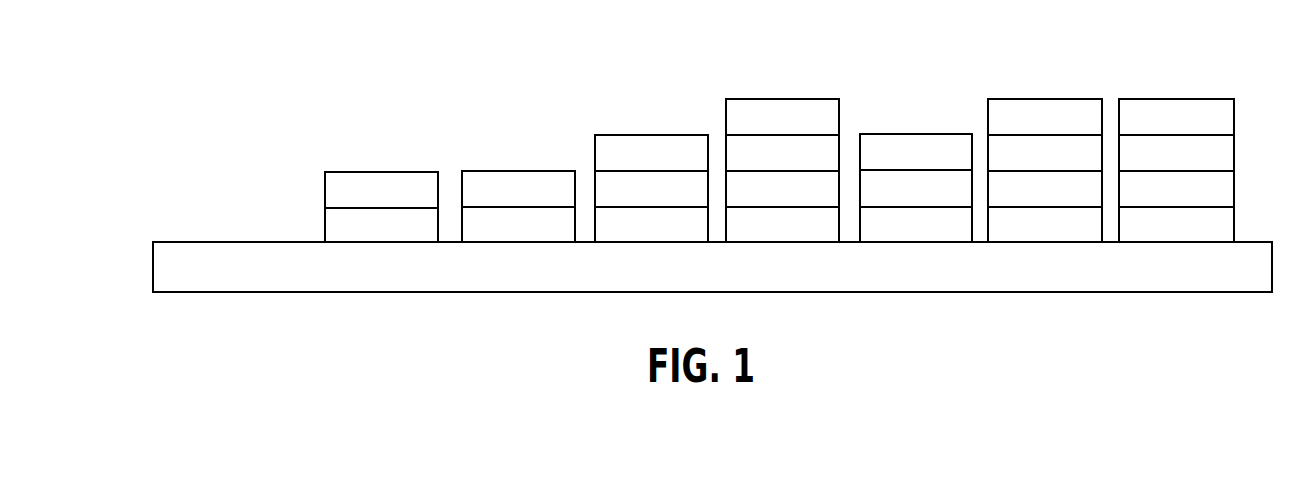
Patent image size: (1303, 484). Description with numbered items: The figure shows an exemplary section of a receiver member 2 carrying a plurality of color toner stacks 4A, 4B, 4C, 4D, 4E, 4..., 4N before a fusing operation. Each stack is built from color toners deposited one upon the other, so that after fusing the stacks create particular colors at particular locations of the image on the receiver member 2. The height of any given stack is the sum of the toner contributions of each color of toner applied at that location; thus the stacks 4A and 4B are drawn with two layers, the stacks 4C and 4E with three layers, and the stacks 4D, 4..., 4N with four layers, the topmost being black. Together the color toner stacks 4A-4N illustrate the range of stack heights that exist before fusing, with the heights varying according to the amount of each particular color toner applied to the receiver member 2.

The receiver member 2 is at (153, 266).
The color toner stack 4A is at (385, 172).
The color toner stack 4B is at (516, 171).
The color toner stack 4C is at (653, 135).
The color toner stack 4D is at (783, 99).
The color toner stack 4E is at (912, 134).
The color toner stack 4... is at (1045, 99).
The color toner stack 4N is at (1175, 99).